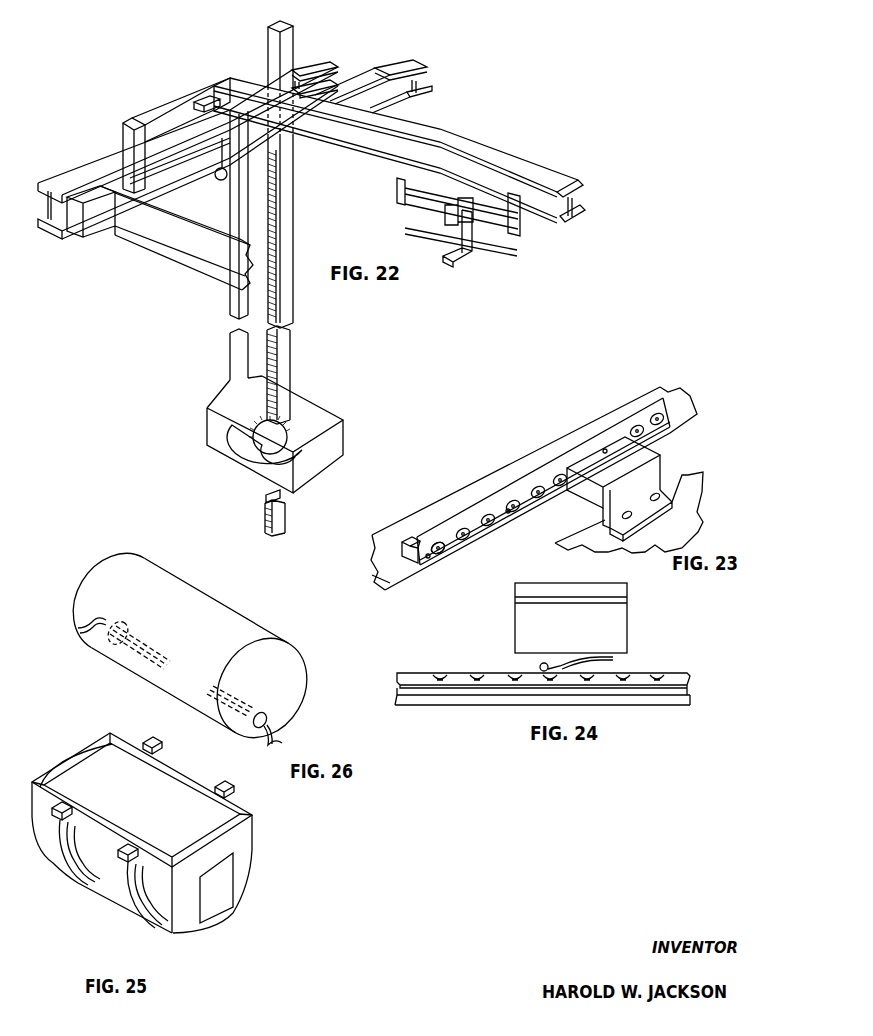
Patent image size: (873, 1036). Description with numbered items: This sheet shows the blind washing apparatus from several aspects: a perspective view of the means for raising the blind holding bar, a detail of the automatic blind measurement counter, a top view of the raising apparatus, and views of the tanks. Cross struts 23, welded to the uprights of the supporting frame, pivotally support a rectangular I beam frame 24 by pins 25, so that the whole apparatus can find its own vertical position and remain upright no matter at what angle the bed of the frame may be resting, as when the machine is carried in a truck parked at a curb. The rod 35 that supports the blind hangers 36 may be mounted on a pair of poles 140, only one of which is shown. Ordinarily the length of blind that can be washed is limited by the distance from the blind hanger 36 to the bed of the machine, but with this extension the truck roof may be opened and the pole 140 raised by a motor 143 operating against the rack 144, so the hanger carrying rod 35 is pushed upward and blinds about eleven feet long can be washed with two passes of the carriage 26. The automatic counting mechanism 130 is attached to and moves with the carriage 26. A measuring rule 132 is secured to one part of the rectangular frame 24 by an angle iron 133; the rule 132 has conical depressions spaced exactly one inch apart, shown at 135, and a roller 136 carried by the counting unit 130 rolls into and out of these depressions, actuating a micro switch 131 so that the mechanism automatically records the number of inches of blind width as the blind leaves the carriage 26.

In FIG. 22, the cross struts 23 is at (70, 183).
In FIG. 22, the rectangular I beam frame 24 is at (88, 230).
In FIG. 23, the rectangular I beam frame 24 is at (615, 410).
In FIG. 22, the pins 25 is at (223, 181).
In FIG. 22, the rod 35 is at (378, 157).
In FIG. 22, the blind hangers 36 is at (470, 253).
In FIG. 22, the poles 140 is at (293, 37).
In FIG. 22, the motor 143 is at (280, 443).
In FIG. 22, the rack 144 is at (252, 385).
In FIG. 23, the automatic counting mechanism 130 is at (628, 447).
In FIG. 24, the automatic counting mechanism 130 is at (528, 618).
In FIG. 24, the micro switch 131 is at (568, 653).
In FIG. 23, the measuring rule 132 is at (670, 400).
In FIG. 23, the angle iron 133 is at (408, 539).
In FIG. 23, the hole 135 is at (438, 537).
In FIG. 24, the roller 136 is at (537, 667).
In FIG. 23, the carriage 26 is at (678, 515).